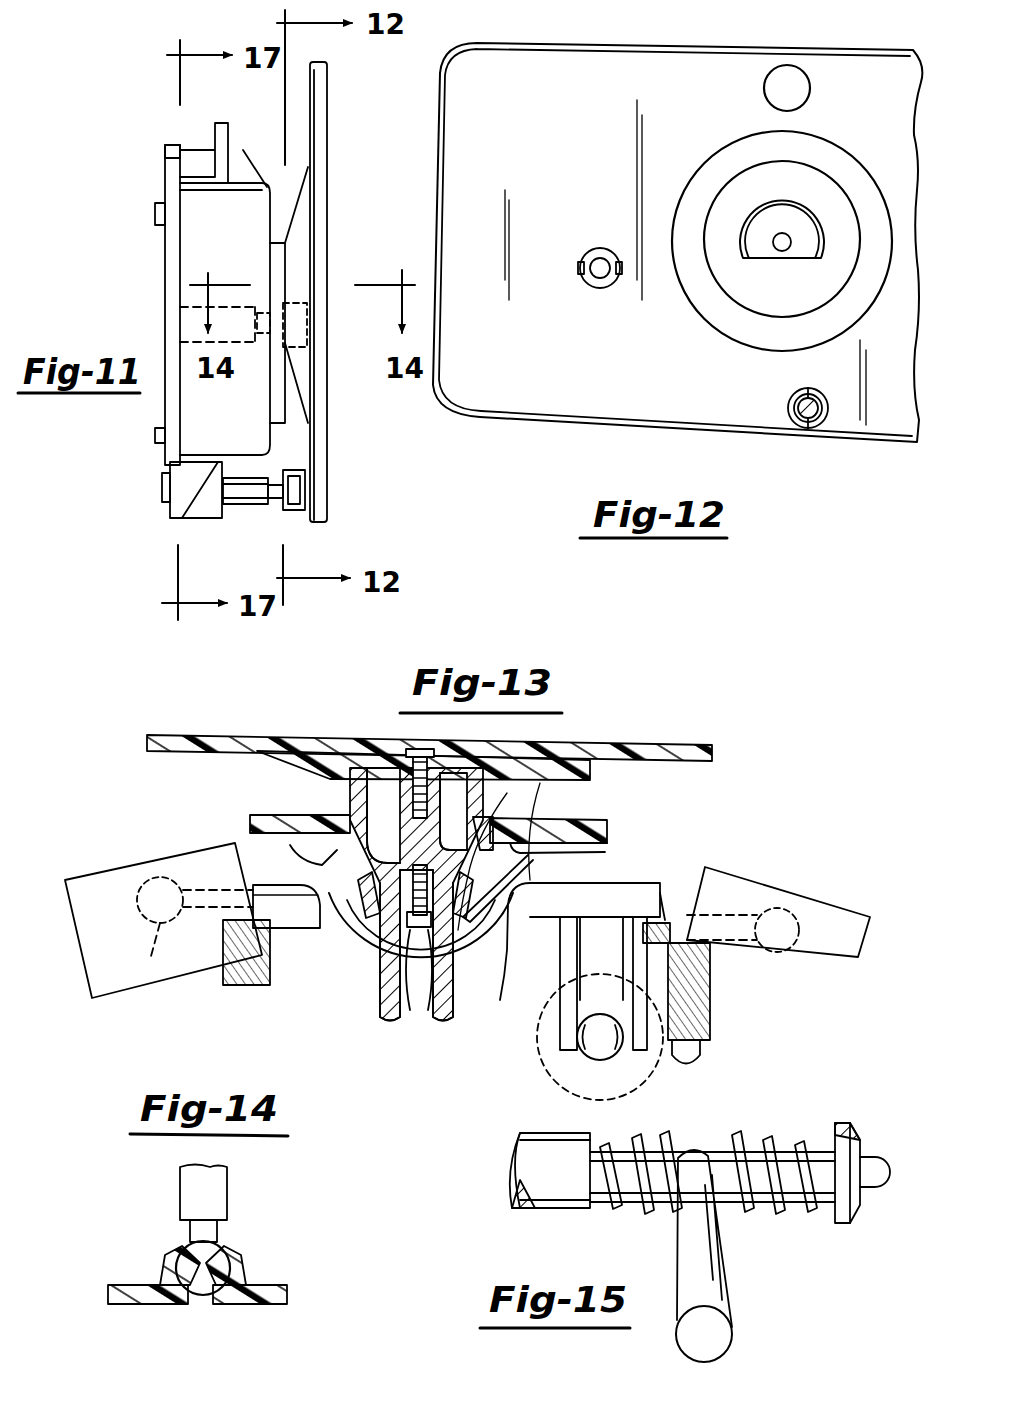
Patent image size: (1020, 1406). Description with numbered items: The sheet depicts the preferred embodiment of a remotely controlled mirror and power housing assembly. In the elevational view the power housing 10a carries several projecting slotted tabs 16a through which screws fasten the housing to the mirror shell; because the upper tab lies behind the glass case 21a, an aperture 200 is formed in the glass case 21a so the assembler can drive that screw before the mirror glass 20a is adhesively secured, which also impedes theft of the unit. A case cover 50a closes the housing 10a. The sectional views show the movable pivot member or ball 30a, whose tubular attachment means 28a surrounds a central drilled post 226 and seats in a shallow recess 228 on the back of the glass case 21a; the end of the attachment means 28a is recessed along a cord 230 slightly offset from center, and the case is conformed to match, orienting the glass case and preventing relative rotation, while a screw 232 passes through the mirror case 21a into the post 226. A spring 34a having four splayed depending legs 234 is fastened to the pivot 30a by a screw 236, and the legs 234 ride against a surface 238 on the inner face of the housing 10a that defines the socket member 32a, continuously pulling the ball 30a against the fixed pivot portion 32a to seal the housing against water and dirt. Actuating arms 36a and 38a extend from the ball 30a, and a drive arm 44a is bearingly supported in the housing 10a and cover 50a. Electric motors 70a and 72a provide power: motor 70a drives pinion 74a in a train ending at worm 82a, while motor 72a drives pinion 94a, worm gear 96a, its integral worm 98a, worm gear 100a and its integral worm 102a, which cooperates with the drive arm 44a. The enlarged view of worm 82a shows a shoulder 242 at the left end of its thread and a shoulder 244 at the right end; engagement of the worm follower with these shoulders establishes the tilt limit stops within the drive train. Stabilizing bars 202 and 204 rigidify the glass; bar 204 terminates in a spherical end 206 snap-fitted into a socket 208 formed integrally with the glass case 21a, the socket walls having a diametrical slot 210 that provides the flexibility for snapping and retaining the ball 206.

In FIG. 11, the power housing 10a is at (185, 408).
In FIG. 13, the power housing 10a is at (250, 822).
In FIG. 11, the projecting slotted tabs 16a is at (222, 140).
In FIG. 13, the mirror glass 20a is at (663, 746).
In FIG. 11, the glass case 21a is at (322, 108).
In FIG. 12, the glass case 21a is at (605, 22).
In FIG. 13, the glass case 21a is at (705, 762).
In FIG. 14, the glass case 21a is at (287, 1292).
In FIG. 13, the attachment means 28a is at (342, 779).
In FIG. 13, the movable pivot member 30a is at (475, 840).
In FIG. 13, the socket member 32a is at (580, 852).
In FIG. 13, the spring 34a is at (525, 875).
In FIG. 13, the actuating arm 36a is at (442, 1027).
In FIG. 13, the actuating arm 38a is at (392, 1020).
In FIG. 13, the vertical drive arm 44a is at (345, 996).
In FIG. 11, the case cover 50a is at (170, 253).
In FIG. 13, the electric motor 70a is at (185, 830).
In FIG. 13, the electric motor 72a is at (740, 890).
In FIG. 13, the pinion 74a is at (165, 945).
In FIG. 15, the worm 82a is at (727, 1148).
In FIG. 13, the pinion 94a is at (797, 908).
In FIG. 13, the worm gear 96a is at (672, 895).
In FIG. 13, the worm 98a is at (705, 1008).
In FIG. 13, the worm gear 100a is at (642, 1078).
In FIG. 13, the worm 102a is at (600, 1060).
In FIG. 12, the aperture 200 is at (800, 74).
In FIG. 11, the bar 202 is at (287, 287).
In FIG. 12, the bar 202 is at (607, 262).
In FIG. 11, the bar 204 is at (252, 505).
In FIG. 12, the bar 204 is at (792, 407).
In FIG. 14, the bar 204 is at (222, 1183).
In FIG. 11, the spherical end 206 is at (276, 500).
In FIG. 14, the spherical end 206 is at (208, 1290).
In FIG. 11, the socket 208 is at (293, 513).
In FIG. 12, the socket 208 is at (800, 420).
In FIG. 14, the socket 208 is at (245, 1262).
In FIG. 12, the diametrical slot 210 is at (815, 390).
In FIG. 13, the central drilled post 226 is at (405, 795).
In FIG. 13, the shallow recess 228 is at (404, 752).
In FIG. 12, the cord 230 is at (778, 262).
In FIG. 13, the screw 232 is at (458, 774).
In FIG. 13, the splayed depending legs 234 is at (346, 938).
In FIG. 13, the screw 236 is at (420, 1022).
In FIG. 13, the surface 238 is at (318, 848).
In FIG. 15, the shoulder 242 is at (592, 1208).
In FIG. 15, the shoulder 244 is at (838, 1212).